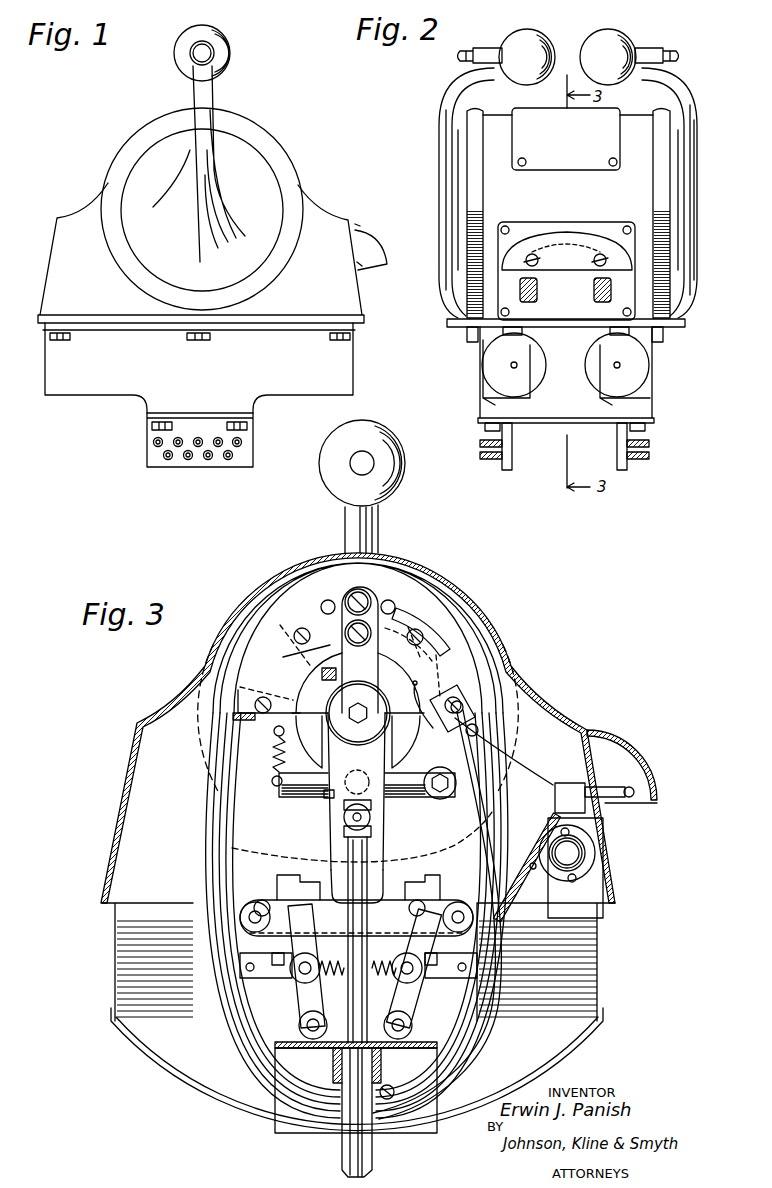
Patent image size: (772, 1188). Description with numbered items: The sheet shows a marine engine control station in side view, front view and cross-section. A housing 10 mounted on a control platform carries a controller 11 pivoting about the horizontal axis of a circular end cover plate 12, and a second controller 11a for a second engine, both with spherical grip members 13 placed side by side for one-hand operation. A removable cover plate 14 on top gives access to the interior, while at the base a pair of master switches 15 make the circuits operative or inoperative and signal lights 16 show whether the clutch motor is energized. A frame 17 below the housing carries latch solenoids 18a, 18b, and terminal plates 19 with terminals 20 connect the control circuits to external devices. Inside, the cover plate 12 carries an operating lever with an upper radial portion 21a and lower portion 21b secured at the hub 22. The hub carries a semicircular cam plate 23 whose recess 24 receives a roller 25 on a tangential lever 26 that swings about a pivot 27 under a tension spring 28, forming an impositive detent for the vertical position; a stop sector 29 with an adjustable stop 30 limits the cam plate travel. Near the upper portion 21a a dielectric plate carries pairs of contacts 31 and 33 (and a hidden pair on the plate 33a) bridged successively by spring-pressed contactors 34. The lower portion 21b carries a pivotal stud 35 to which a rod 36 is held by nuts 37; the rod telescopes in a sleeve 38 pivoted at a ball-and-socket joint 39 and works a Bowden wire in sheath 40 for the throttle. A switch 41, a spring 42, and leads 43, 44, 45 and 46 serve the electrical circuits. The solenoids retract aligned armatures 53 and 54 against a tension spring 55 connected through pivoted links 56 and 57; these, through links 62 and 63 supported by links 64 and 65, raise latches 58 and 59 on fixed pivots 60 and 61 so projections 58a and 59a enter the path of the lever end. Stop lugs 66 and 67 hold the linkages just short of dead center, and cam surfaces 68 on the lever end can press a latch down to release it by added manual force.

In FIG. 1, the housing 10 is at (313, 218).
In FIG. 2, the housing 10 is at (494, 124).
In FIG. 3, the housing 10 is at (130, 769).
In FIG. 1, the controller 11 is at (207, 88).
In FIG. 2, the controller 11 is at (458, 93).
In FIG. 2, the second controller 11a is at (690, 96).
In FIG. 1, the circular end cover plate 12 is at (140, 173).
In FIG. 2, the circular end cover plate 12 is at (463, 192).
In FIG. 1, the spherical grip members 13 is at (177, 56).
In FIG. 2, the spherical grip members 13 is at (511, 45).
In FIG. 2, the removable cover plate 14 is at (598, 118).
In FIG. 2, the master switches 15 is at (566, 271).
In FIG. 3, the master switches 15 is at (592, 778).
In FIG. 2, the signal lights 16 is at (592, 292).
In FIG. 3, the signal lights 16 is at (598, 853).
In FIG. 1, the frame 17 is at (95, 384).
In FIG. 2, the frame 17 is at (545, 421).
In FIG. 3, the frame 17 is at (283, 1131).
In FIG. 3, the latch solenoid 18a is at (128, 956).
In FIG. 2, the latch solenoid 18b is at (600, 372).
In FIG. 3, the latch solenoid 18b is at (590, 961).
In FIG. 1, the terminal plates 19 is at (245, 437).
In FIG. 2, the terminal plates 19 is at (507, 471).
In FIG. 1, the terminals 20 is at (208, 460).
In FIG. 2, the terminals 20 is at (480, 444).
In FIG. 3, the upper radial portion of operating lever 21a is at (372, 668).
In FIG. 3, the lower radial portion of operating lever 21b is at (380, 800).
In FIG. 3, the hub 22 is at (369, 713).
In FIG. 3, the cam plate 23 is at (312, 738).
In FIG. 3, the semicircular recess 24 is at (352, 773).
In FIG. 3, the roller 25 is at (330, 800).
In FIG. 3, the tangentially positioned lever 26 is at (415, 772).
In FIG. 3, the pivot 27 is at (457, 785).
In FIG. 3, the tension spring 28 is at (272, 762).
In FIG. 3, the stop lug or sector 29 is at (322, 672).
In FIG. 3, the adjustable stop 30 is at (330, 682).
In FIG. 3, the pair of contacts 31 is at (318, 632).
In FIG. 3, the pair of contacts 33 is at (392, 604).
In FIG. 3, the slotted plate 33a is at (433, 630).
In FIG. 3, the spring-pressed contactors 34 is at (376, 590).
In FIG. 3, the pivotal stud 35 is at (388, 849).
In FIG. 3, the rod 36 is at (346, 873).
In FIG. 3, the nuts 37 is at (350, 828).
In FIG. 3, the sleeve 38 is at (368, 1013).
In FIG. 3, the ball-and-socket joint 39 is at (373, 1058).
In FIG. 3, the sheath 40 is at (364, 1155).
In FIG. 3, the switch 41 is at (447, 697).
In FIG. 3, the spring wire 42 is at (418, 690).
In FIG. 3, the lead 43 is at (548, 844).
In FIG. 3, the lead 44 is at (533, 870).
In FIG. 3, the conductor 45 is at (527, 770).
In FIG. 3, the lead 46 is at (485, 832).
In FIG. 3, the armature 53 is at (262, 978).
In FIG. 3, the armature 54 is at (447, 979).
In FIG. 3, the tension spring 55 is at (335, 976).
In FIG. 3, the pivoted link 56 is at (281, 978).
In FIG. 3, the pivoted link 57 is at (418, 985).
In FIG. 3, the latch or dog 58 is at (282, 891).
In FIG. 3, the projection 58a is at (292, 878).
In FIG. 3, the latch or dog 59 is at (432, 891).
In FIG. 3, the projection 59a is at (430, 880).
In FIG. 3, the fixed pivot 60 is at (460, 905).
In FIG. 3, the fixed pivot 61 is at (251, 909).
In FIG. 3, the link 62 is at (294, 940).
In FIG. 3, the link 63 is at (420, 940).
In FIG. 3, the link 64 is at (299, 1020).
In FIG. 3, the link 65 is at (411, 1022).
In FIG. 3, the stop lug 66 is at (313, 957).
In FIG. 3, the stop lug 67 is at (396, 957).
In FIG. 3, the cam surfaces 68 is at (300, 903).